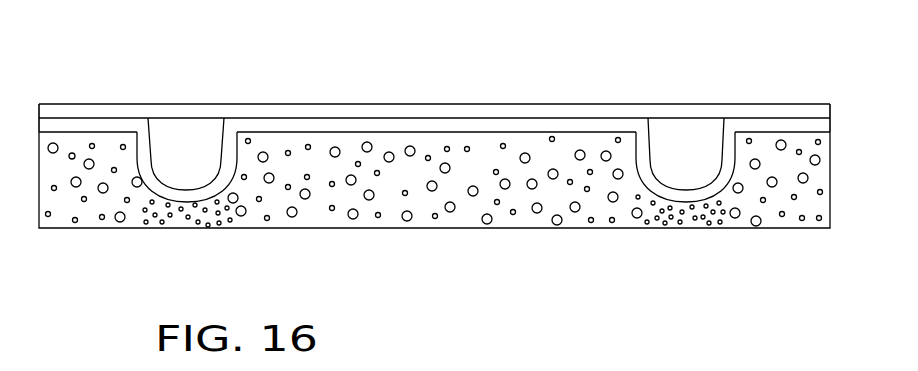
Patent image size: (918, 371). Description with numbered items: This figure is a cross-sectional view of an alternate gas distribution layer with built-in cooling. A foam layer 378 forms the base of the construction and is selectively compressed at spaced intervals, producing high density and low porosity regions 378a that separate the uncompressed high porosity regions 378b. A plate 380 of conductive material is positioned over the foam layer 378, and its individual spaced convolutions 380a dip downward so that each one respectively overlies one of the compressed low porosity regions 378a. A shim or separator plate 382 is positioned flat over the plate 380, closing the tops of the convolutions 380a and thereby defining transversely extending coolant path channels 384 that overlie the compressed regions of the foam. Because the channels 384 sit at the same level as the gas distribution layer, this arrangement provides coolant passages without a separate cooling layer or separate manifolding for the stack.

The foam layer 378 is at (431, 230).
The high density and low porosity regions 378a is at (180, 222).
The high porosity regions 378b is at (550, 200).
The plate 380 is at (469, 118).
The convolutions 380a is at (687, 215).
The shim or separator plate 382 is at (341, 104).
The coolant path channels 384 is at (683, 140).